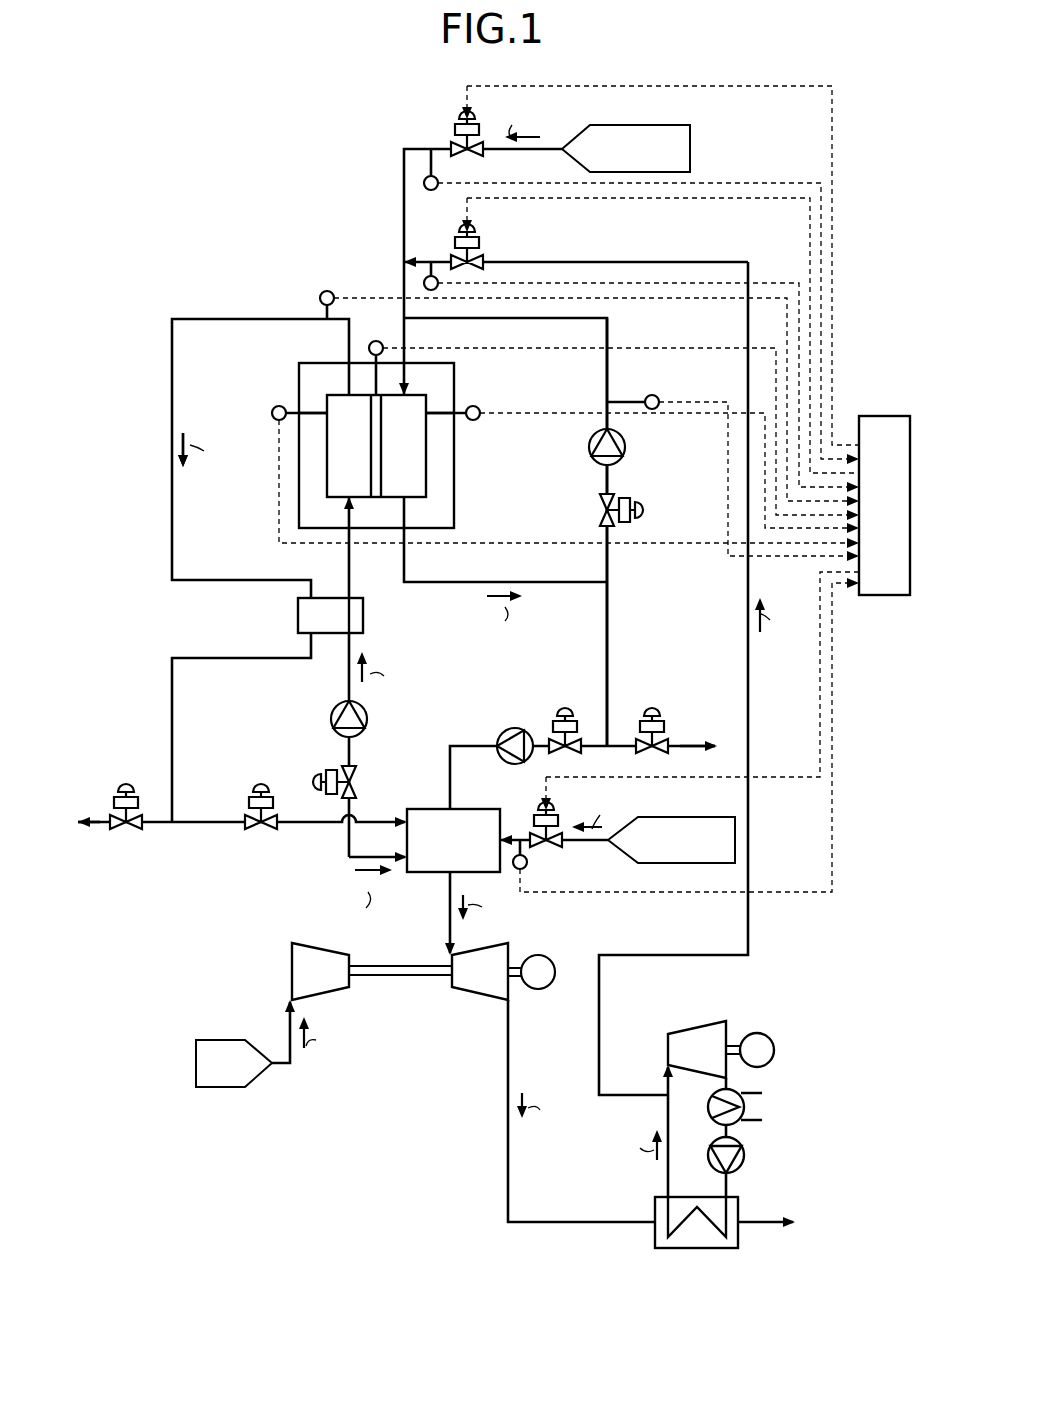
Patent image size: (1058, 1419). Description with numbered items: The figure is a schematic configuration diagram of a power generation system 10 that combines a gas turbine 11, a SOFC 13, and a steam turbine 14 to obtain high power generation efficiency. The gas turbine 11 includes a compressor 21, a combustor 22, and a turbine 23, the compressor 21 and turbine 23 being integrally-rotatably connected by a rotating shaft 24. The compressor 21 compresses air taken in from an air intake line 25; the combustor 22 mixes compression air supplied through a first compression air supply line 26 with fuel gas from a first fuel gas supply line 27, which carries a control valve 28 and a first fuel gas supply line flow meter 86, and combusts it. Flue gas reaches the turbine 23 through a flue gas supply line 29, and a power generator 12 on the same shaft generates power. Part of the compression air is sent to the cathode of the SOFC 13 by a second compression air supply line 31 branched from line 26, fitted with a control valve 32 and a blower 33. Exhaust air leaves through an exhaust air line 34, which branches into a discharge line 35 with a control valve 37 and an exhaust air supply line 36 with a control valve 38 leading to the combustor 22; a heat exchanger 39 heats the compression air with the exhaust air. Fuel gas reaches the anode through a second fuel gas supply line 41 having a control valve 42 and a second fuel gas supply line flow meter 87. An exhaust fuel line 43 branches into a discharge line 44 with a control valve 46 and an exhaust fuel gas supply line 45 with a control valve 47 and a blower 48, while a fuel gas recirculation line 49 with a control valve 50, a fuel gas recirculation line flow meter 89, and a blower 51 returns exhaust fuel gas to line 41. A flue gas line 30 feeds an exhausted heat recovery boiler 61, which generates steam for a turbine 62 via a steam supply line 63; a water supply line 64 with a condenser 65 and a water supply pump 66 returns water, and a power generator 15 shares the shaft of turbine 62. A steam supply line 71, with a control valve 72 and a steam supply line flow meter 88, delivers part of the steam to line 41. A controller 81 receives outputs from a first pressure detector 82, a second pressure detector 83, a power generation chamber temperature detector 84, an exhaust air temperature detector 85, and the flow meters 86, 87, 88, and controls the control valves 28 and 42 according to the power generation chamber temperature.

The power generation system 10 is at (248, 158).
The gas turbine 11 is at (300, 928).
The power generator 12 is at (540, 952).
The SOFC 13 is at (299, 383).
The steam turbine 14 is at (760, 1000).
The power generator 15 is at (775, 1047).
The compressor 21 is at (290, 970).
The combustor 22 is at (423, 805).
The turbine 23 is at (474, 988).
The rotating shaft 24 is at (401, 978).
The air intake line 25 is at (280, 1064).
The first compression air supply line 26 is at (377, 855).
The first fuel gas supply line 27 is at (598, 842).
The control valve 28 is at (538, 800).
The flue gas supply line 29 is at (449, 918).
The flue gas line 30 is at (504, 1171).
The second compression air supply line 31 is at (347, 566).
The control valve 32 is at (316, 787).
The blower 33 is at (368, 719).
The exhaust air line 34 is at (172, 506).
The discharge line 35 is at (96, 825).
The exhaust air supply line 36 is at (205, 825).
The control valve 37 is at (128, 783).
The control valve 38 is at (263, 783).
The heat exchanger 39 is at (298, 616).
The second fuel gas supply line 41 is at (402, 211).
The control valve 42 is at (458, 124).
The exhaust fuel line 43 is at (439, 584).
The discharge line 44 is at (688, 743).
The exhaust fuel gas supply line 45 is at (472, 743).
The control valve 46 is at (653, 703).
The control valve 47 is at (566, 703).
The blower 48 is at (516, 721).
The fuel gas recirculation line 49 is at (610, 378).
The control valve 50 is at (648, 509).
The blower 51 is at (626, 446).
The exhausted heat recovery boiler 61 is at (693, 1248).
The turbine 62 is at (696, 1029).
The steam supply line 63 is at (668, 1181).
The water supply line 64 is at (735, 1187).
The condenser 65 is at (742, 1081).
The water supply pump 66 is at (744, 1157).
The steam supply line 71 is at (750, 926).
The control valve 72 is at (477, 227).
The controller 81 is at (886, 414).
The first pressure detector 82 is at (272, 414).
The second pressure detector 83 is at (474, 406).
The power generation chamber temperature detector 84 is at (377, 342).
The exhaust air temperature detector 85 is at (328, 290).
The first fuel gas supply line flow meter 86 is at (526, 868).
The second fuel gas supply line flow meter 87 is at (431, 191).
The steam supply line flow meter 88 is at (424, 283).
The fuel gas recirculation line flow meter 89 is at (660, 391).